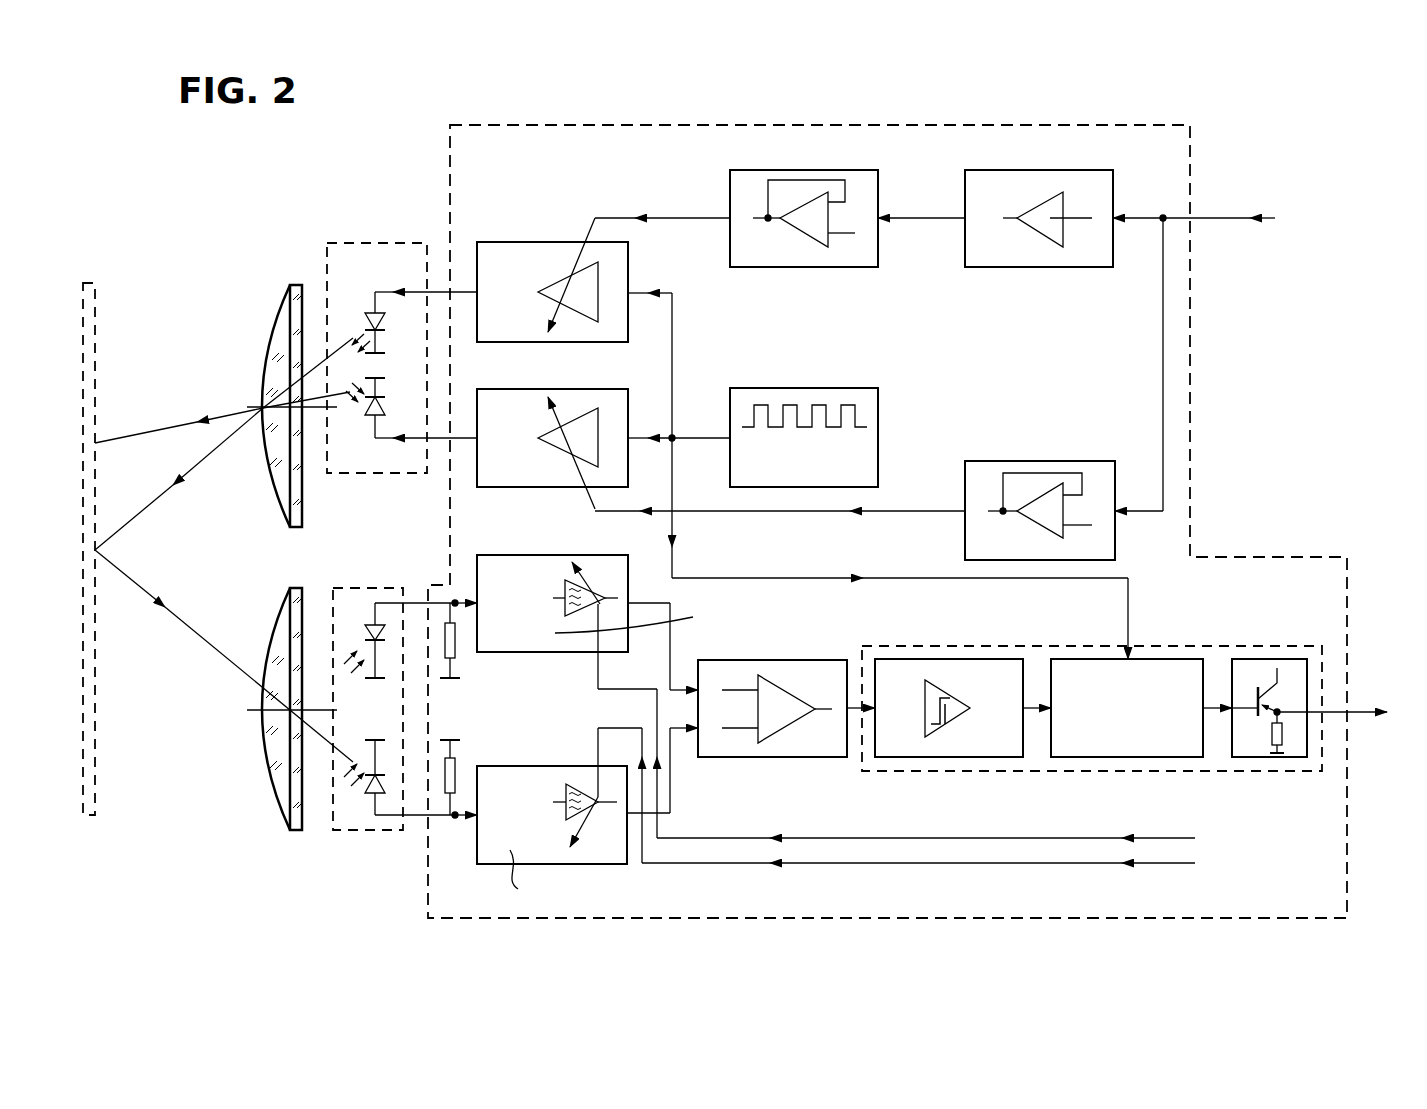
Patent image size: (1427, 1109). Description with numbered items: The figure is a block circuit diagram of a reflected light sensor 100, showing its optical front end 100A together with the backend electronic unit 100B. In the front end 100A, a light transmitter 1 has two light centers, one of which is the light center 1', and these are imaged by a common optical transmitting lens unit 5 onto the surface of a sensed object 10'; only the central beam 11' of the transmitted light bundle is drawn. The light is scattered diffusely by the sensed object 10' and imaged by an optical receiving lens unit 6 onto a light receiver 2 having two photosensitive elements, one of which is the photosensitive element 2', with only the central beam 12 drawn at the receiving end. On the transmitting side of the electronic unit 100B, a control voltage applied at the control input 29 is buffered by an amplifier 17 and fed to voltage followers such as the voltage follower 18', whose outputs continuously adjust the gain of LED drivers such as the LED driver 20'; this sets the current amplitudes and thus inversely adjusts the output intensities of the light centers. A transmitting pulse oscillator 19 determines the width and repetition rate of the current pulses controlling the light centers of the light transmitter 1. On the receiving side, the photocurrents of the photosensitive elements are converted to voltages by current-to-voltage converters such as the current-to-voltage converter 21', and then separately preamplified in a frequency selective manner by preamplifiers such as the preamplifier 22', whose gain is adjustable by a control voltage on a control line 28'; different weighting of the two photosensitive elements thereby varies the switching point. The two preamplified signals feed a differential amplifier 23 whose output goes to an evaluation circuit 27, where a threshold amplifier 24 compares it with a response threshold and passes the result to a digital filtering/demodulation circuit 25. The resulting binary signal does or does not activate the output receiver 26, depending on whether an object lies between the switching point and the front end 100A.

The reflected light sensor 100 is at (553, 111).
The front end 100A is at (312, 240).
The backend electronic unit 100B is at (800, 125).
The light transmitter 1 is at (377, 330).
The light center 1' is at (408, 416).
The light receiver 2 is at (368, 679).
The photosensitive element 2' is at (410, 783).
The optical transmitting lens unit 5 is at (283, 316).
The optical receiving lens unit 6 is at (283, 790).
The sensed object 10' is at (112, 569).
The central beam 11' is at (224, 390).
The central beam 12 is at (215, 648).
The amplifier 17 is at (1030, 255).
The voltage follower 18' is at (879, 486).
The transmitting pulse oscillator 19 is at (812, 388).
The LED driver 20' is at (601, 432).
The current-to-voltage converter 21' is at (475, 773).
The preamplifier 22' is at (600, 808).
The differential amplifier 23 is at (803, 750).
The threshold amplifier 24 is at (962, 750).
The digital filtering/demodulation circuit 25 is at (1133, 750).
The output receiver 26 is at (1257, 748).
The evaluation circuit 27 is at (1228, 646).
The control line 28' is at (945, 772).
The control input 29 is at (1232, 222).